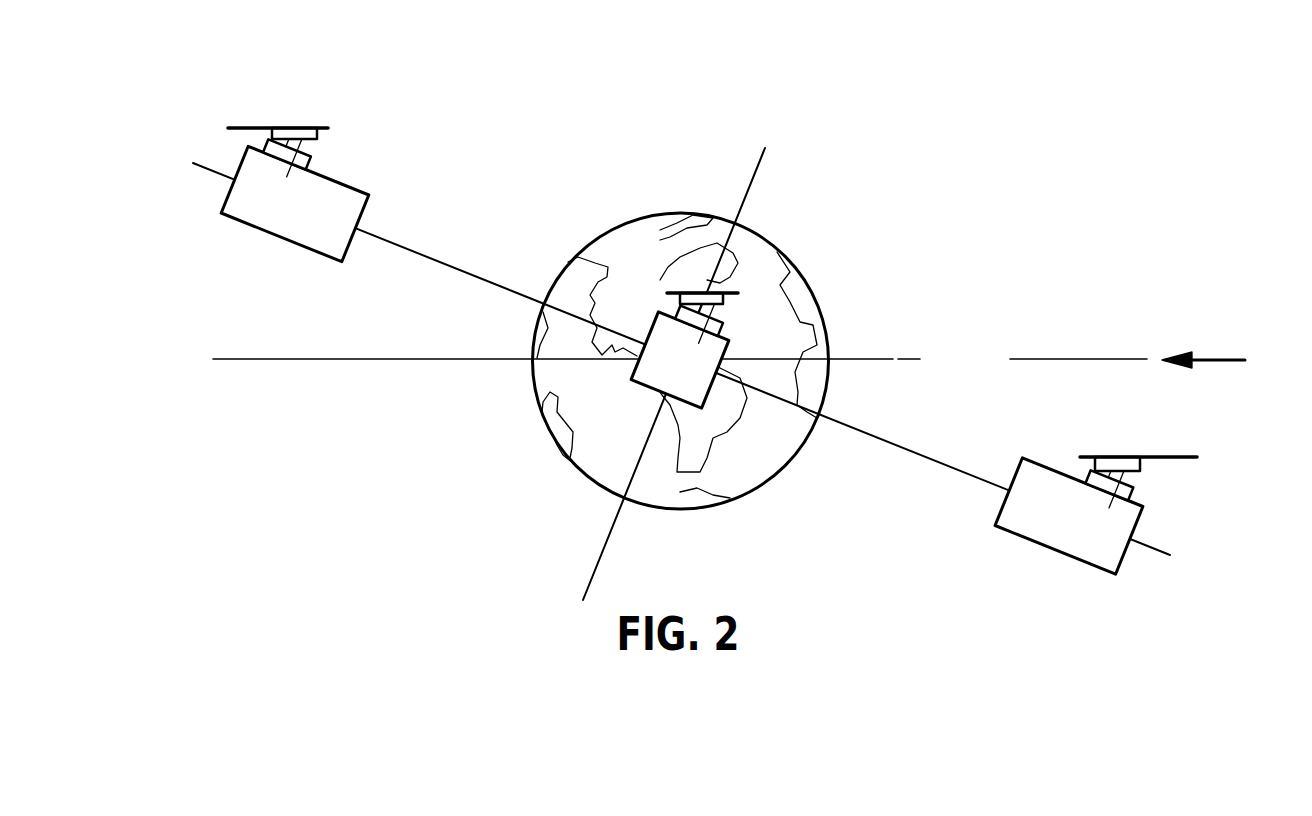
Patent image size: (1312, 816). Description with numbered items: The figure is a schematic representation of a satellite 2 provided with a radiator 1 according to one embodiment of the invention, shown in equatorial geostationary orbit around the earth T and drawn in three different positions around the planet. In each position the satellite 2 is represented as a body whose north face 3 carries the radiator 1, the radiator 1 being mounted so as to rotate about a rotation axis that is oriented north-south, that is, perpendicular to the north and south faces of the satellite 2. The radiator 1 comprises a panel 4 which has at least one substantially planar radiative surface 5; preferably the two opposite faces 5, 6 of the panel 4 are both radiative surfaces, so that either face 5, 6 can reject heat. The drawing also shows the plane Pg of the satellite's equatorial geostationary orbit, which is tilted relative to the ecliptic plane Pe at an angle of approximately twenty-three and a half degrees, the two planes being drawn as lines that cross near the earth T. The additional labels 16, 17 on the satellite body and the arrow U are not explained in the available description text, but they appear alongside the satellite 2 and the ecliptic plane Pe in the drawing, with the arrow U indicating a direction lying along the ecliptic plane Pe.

The radiator 1 is at (327, 146).
The satellite 2 is at (243, 226).
The north face 3 is at (350, 187).
The panel 4 is at (297, 127).
The radiative surface 5 is at (243, 127).
The opposite face of the panel 6 is at (237, 131).
The side face 16 is at (343, 240).
The bottom face 17 is at (307, 252).
The earth T is at (773, 242).
The plane of the equatorial geostationary orbit Pg is at (449, 250).
The ecliptic plane Pe is at (1081, 344).
The direction U is at (1222, 359).